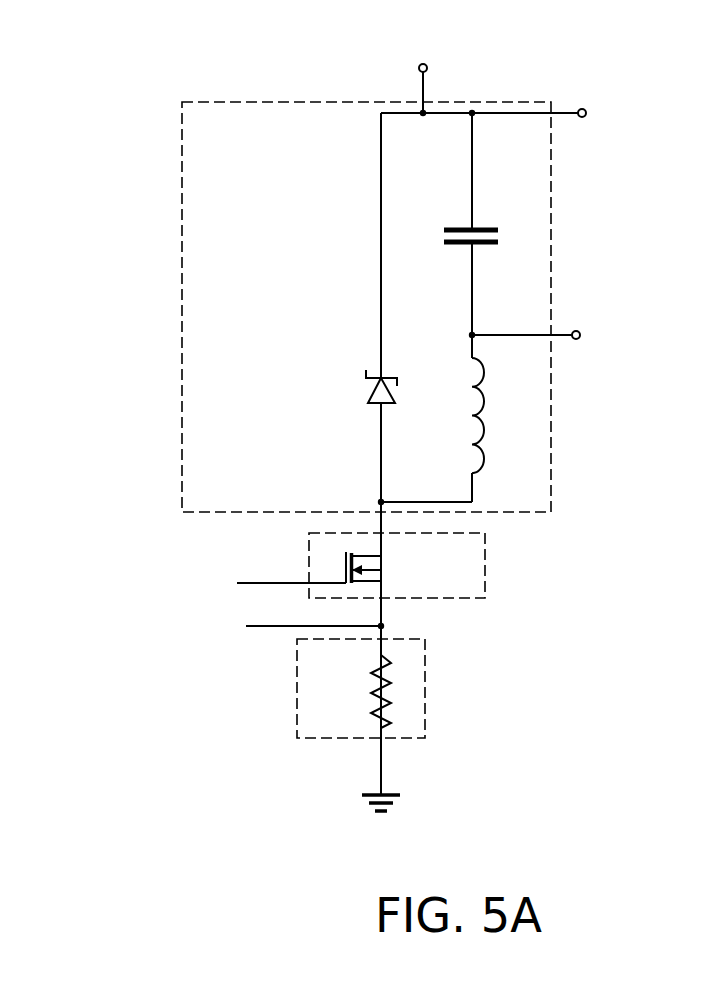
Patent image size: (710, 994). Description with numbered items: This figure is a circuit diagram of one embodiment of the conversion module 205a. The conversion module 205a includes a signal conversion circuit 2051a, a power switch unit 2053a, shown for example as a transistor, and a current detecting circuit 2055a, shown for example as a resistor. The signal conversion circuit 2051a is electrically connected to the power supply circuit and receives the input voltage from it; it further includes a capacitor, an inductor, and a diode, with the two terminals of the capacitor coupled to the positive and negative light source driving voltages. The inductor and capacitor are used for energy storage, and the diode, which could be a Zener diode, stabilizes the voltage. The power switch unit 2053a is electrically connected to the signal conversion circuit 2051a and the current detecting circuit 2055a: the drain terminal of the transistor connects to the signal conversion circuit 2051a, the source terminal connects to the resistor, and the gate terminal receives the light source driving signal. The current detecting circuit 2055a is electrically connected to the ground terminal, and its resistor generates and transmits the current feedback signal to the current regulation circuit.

The conversion module 205a is at (635, 796).
The signal conversion circuit 2051a is at (322, 262).
The power switch unit 2053a is at (465, 569).
The current detecting circuit 2055a is at (415, 672).